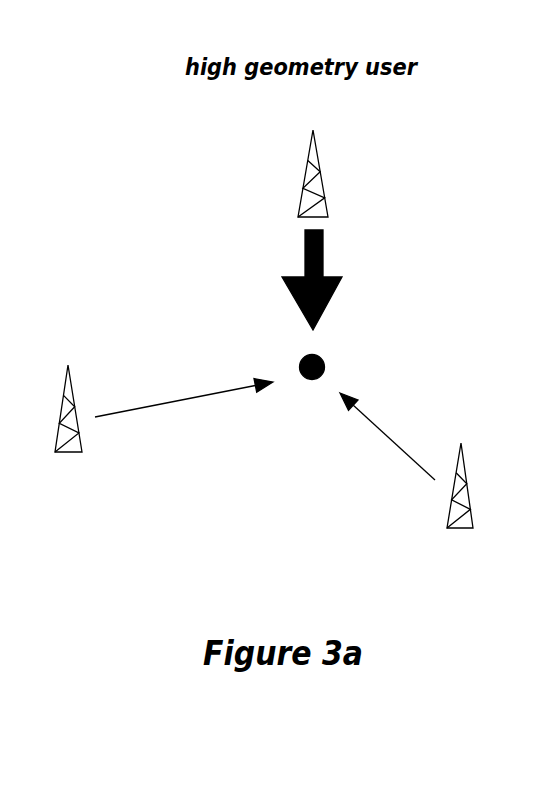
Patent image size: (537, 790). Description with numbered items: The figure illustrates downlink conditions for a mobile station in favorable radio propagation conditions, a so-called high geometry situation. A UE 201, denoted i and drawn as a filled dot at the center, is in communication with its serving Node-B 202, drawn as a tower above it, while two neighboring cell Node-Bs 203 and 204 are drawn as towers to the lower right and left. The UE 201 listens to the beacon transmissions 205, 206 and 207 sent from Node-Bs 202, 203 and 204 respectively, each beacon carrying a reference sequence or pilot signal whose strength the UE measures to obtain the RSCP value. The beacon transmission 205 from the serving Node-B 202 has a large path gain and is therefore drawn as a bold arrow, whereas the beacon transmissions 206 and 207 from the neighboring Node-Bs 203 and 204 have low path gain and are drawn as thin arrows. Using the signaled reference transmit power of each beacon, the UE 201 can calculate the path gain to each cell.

The UE 201 is at (370, 380).
The serving Node-B 202 is at (288, 203).
The neighboring cell Node-B 203 is at (478, 560).
The neighboring cell Node-B 204 is at (85, 483).
The beacon transmission 205 is at (290, 270).
The beacon transmission 206 is at (390, 480).
The beacon transmission 207 is at (190, 468).